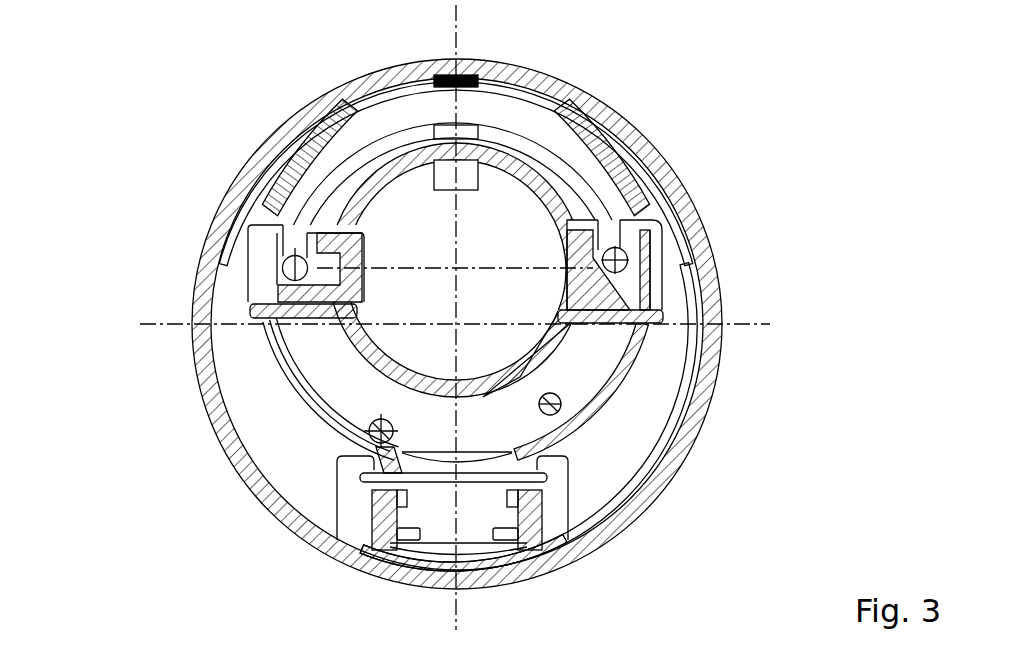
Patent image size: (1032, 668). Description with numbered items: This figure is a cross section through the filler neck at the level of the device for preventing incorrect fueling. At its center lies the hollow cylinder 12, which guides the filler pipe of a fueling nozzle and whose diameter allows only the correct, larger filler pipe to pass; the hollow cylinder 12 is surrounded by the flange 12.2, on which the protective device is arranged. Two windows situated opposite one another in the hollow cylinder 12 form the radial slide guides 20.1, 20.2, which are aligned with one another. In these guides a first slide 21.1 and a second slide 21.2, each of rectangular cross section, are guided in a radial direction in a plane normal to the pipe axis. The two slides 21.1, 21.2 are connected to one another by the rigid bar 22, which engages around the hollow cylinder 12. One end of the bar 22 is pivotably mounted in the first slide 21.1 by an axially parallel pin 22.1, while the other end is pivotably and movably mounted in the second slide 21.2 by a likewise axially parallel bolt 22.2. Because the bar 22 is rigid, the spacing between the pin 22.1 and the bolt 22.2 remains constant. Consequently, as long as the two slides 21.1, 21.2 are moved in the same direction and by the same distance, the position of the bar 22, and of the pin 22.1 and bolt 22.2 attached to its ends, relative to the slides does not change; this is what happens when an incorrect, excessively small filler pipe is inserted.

The hollow cylinder 12 is at (383, 363).
The flange 12.2 is at (572, 372).
The first slide guide 20.1 is at (295, 291).
The second slide guide 20.2 is at (650, 317).
The first slide 21.1 is at (308, 306).
The second slide 21.2 is at (590, 295).
The bar 22 is at (521, 120).
The pin 22.1 is at (295, 268).
The bolt 22.2 is at (615, 262).